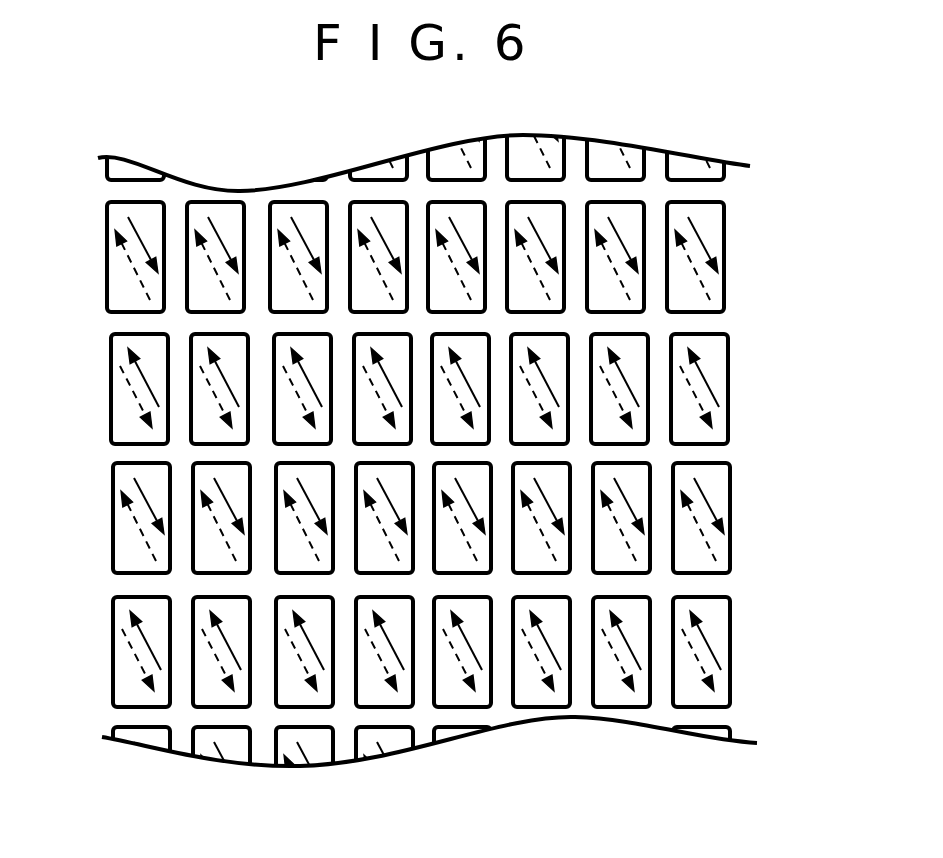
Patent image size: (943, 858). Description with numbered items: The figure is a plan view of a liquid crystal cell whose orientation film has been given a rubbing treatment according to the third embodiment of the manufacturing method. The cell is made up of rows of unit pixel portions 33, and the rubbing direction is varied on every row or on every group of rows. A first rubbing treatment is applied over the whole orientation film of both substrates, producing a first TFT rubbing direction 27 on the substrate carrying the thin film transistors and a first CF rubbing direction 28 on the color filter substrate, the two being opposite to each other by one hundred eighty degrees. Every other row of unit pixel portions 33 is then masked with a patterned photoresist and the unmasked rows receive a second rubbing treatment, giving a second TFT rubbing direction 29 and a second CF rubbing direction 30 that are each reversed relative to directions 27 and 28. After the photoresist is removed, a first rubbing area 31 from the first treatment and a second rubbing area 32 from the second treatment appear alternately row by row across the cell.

The first TFT rubbing direction 27 is at (106, 526).
The first CF rubbing direction 28 is at (110, 482).
The second TFT rubbing direction 29 is at (103, 662).
The second CF rubbing direction 30 is at (110, 624).
The first rubbing area 31 is at (443, 389).
The second rubbing area 32 is at (441, 573).
The unit pixel portion 33 is at (288, 707).